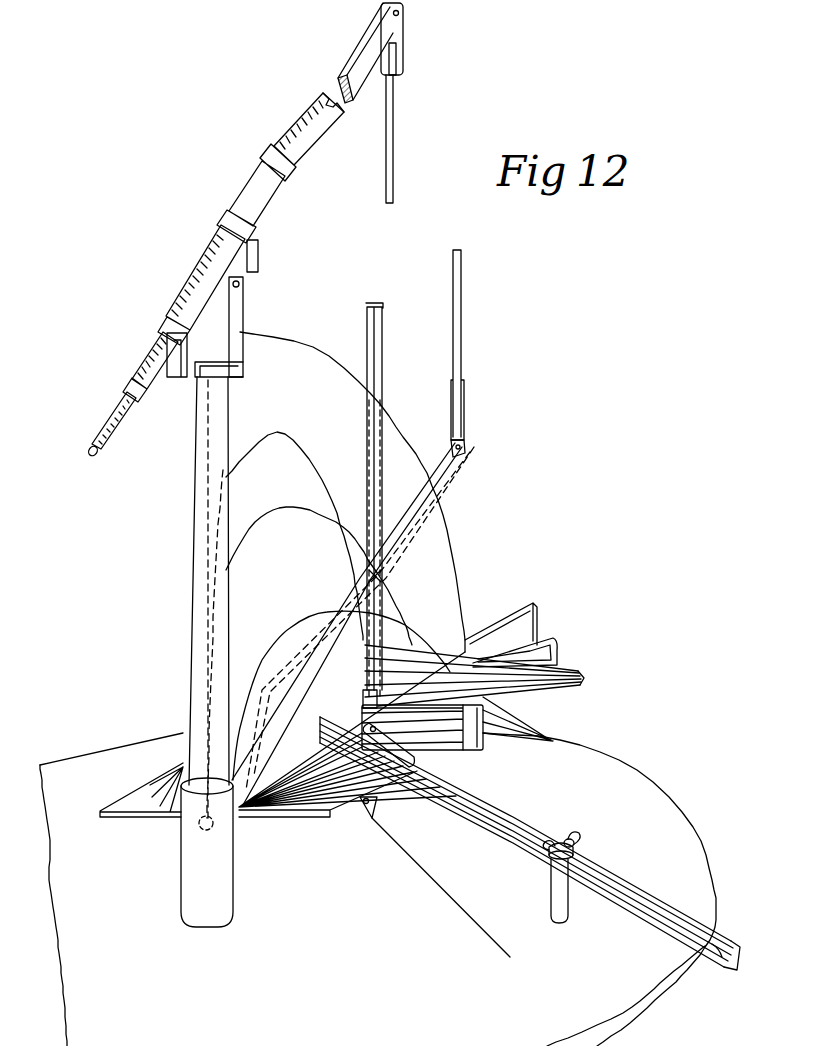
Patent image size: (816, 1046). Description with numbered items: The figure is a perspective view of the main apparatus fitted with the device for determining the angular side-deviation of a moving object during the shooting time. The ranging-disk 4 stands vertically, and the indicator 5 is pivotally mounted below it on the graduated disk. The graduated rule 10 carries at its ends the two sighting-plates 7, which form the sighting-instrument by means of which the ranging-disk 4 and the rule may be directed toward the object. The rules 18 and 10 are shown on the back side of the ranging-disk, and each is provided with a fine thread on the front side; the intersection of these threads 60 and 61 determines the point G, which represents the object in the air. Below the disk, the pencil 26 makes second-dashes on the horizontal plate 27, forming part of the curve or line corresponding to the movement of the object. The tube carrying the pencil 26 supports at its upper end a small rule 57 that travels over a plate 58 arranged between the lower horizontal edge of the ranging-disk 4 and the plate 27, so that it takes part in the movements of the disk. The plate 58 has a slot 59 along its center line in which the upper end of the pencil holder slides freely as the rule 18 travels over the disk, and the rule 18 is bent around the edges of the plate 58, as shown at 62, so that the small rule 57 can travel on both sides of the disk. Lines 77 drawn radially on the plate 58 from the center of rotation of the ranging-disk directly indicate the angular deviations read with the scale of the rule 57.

The ranging-disk 4 is at (315, 352).
The indicator 5 is at (608, 881).
The sighting-plates 7 is at (263, 199).
The graduated rule 10 is at (441, 490).
The rule 18 is at (385, 337).
The pencil 26 is at (379, 807).
The horizontal plate 27 is at (630, 780).
The small rule 57 is at (388, 753).
The plate 58 is at (555, 693).
The slot 59 is at (312, 762).
The thread 60 is at (380, 432).
The thread 61 is at (428, 514).
The bent portion of rule 18 62 is at (477, 737).
The angular deviation lines 77 is at (560, 668).
The point G is at (383, 577).